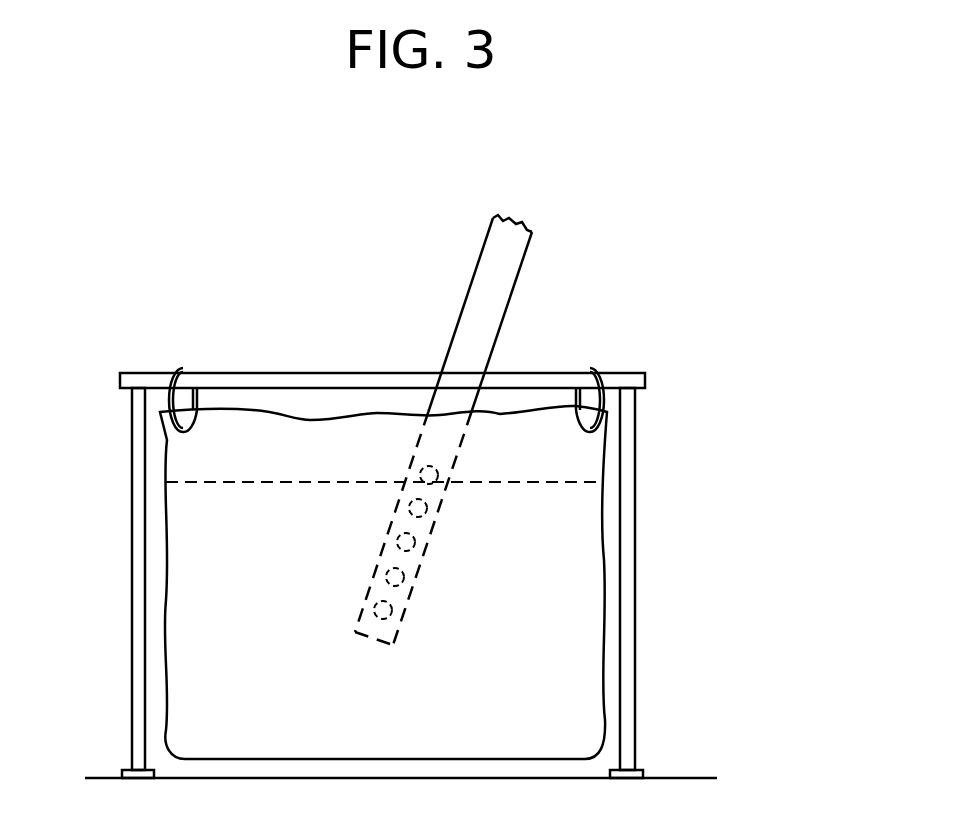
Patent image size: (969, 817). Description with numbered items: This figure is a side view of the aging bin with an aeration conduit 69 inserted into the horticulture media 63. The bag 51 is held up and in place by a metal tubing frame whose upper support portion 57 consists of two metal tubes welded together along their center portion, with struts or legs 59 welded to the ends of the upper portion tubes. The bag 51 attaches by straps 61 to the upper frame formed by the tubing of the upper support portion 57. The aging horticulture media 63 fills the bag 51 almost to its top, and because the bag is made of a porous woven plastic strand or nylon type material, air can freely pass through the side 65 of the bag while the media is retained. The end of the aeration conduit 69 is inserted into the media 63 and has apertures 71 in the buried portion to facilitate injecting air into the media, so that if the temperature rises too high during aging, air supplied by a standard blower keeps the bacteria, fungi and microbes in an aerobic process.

The bag 51 is at (410, 536).
The upper support portion 57 is at (215, 372).
The legs 59 is at (627, 481).
The straps 61 is at (174, 371).
The horticulture media 63 is at (197, 482).
The side of bag 65 is at (197, 645).
The aeration conduit 69 is at (523, 262).
The apertures 71 is at (398, 542).